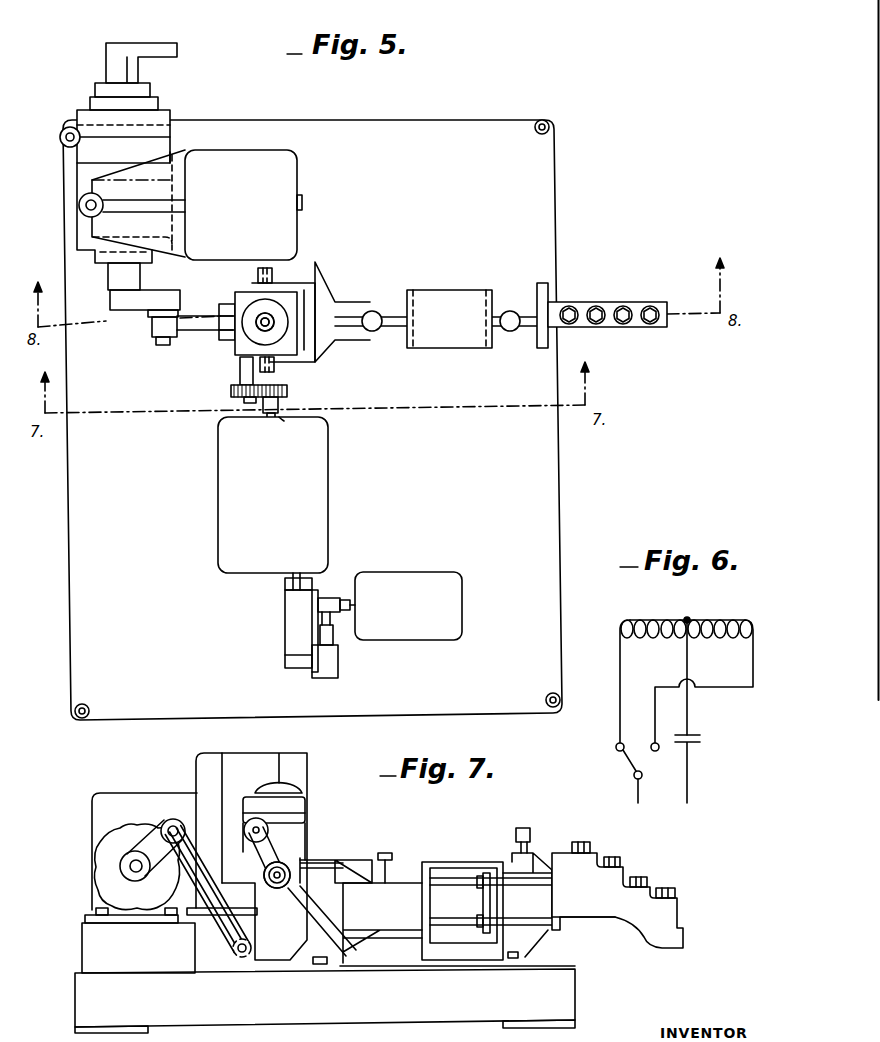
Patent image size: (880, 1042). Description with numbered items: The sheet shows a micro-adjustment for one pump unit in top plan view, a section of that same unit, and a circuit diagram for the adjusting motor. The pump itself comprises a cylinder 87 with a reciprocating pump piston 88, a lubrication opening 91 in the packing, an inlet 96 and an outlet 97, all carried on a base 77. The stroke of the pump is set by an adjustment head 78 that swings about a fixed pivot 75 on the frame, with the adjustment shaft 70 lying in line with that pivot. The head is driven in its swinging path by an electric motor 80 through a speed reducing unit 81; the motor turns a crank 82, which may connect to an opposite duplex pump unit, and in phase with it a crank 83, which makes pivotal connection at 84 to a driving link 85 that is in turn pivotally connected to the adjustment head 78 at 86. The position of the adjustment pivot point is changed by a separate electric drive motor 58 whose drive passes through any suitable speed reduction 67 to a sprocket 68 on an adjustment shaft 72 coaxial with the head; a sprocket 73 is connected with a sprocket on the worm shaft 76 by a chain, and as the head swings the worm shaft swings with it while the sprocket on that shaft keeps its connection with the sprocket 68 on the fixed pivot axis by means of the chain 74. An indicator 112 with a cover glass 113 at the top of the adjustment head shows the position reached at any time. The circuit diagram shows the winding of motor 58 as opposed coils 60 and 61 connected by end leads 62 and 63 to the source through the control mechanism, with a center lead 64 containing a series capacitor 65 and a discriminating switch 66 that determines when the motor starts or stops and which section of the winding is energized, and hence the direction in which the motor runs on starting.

In FIG. 5, the electric drive motor 58 is at (422, 615).
In FIG. 6, the coil 60 is at (650, 620).
In FIG. 6, the coil 61 is at (718, 620).
In FIG. 6, the end lead 62 is at (620, 678).
In FIG. 6, the end lead 63 is at (753, 676).
In FIG. 6, the center lead 64 is at (688, 674).
In FIG. 6, the series capacitor 65 is at (693, 733).
In FIG. 6, the discriminating switch 66 is at (616, 747).
In FIG. 5, the speed reduction 67 is at (328, 468).
In FIG. 5, the sprocket 68 is at (288, 395).
In FIG. 7, the sprocket 68 is at (266, 876).
In FIG. 5, the adjustment shaft 70 is at (284, 420).
In FIG. 7, the adjustment shaft 70 is at (293, 880).
In FIG. 5, the adjustment shaft 72 is at (240, 392).
In FIG. 7, the adjustment shaft 72 is at (250, 826).
In FIG. 5, the sprocket 73 is at (248, 403).
In FIG. 7, the sprocket 73 is at (283, 838).
In FIG. 5, the chain 74 is at (263, 407).
In FIG. 7, the chain 74 is at (290, 866).
In FIG. 5, the fixed pivot 75 is at (272, 272).
In FIG. 5, the worm shaft 76 is at (376, 300).
In FIG. 7, the worm shaft 76 is at (351, 862).
In FIG. 5, the base 77 is at (464, 503).
In FIG. 7, the base 77 is at (310, 1006).
In FIG. 5, the adjustment head 78 is at (236, 298).
In FIG. 7, the adjustment head 78 is at (290, 945).
In FIG. 5, the electric motor 80 is at (246, 211).
In FIG. 7, the electric motor 80 is at (210, 770).
In FIG. 5, the speed reducing unit 81 is at (78, 188).
In FIG. 7, the speed reducing unit 81 is at (100, 806).
In FIG. 5, the crank 82 is at (178, 52).
In FIG. 5, the crank 83 is at (112, 300).
In FIG. 7, the crank 83 is at (147, 840).
In FIG. 5, the pivotal connection 84 is at (158, 340).
In FIG. 7, the pivotal connection 84 is at (174, 823).
In FIG. 5, the driving link 85 is at (200, 334).
In FIG. 7, the driving link 85 is at (222, 913).
In FIG. 5, the pivotal connection 86 is at (228, 334).
In FIG. 7, the pivotal connection 86 is at (238, 956).
In FIG. 5, the cylinder 87 is at (616, 302).
In FIG. 7, the cylinder 87 is at (590, 912).
In FIG. 7, the reciprocating pump piston 88 is at (466, 899).
In FIG. 7, the lubrication opening 91 is at (526, 850).
In FIG. 5, the inlet 96 is at (655, 310).
In FIG. 7, the inlet 96 is at (686, 944).
In FIG. 5, the outlet 97 is at (549, 300).
In FIG. 7, the outlet 97 is at (556, 852).
In FIG. 5, the indicator 112 is at (287, 324).
In FIG. 7, the indicator 112 is at (292, 798).
In FIG. 5, the cover glass 113 is at (268, 320).
In FIG. 7, the cover glass 113 is at (290, 790).